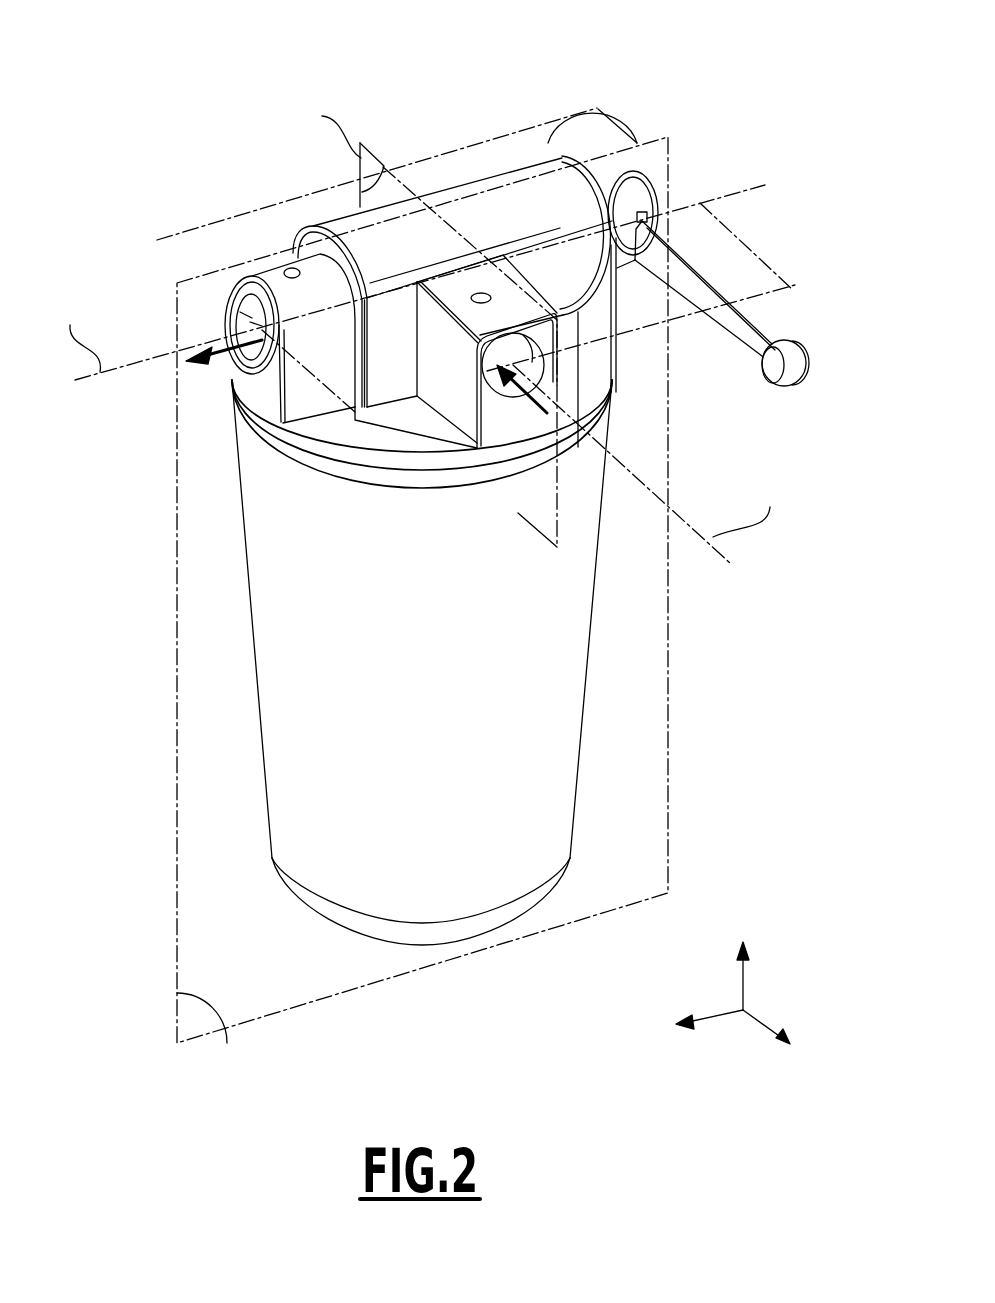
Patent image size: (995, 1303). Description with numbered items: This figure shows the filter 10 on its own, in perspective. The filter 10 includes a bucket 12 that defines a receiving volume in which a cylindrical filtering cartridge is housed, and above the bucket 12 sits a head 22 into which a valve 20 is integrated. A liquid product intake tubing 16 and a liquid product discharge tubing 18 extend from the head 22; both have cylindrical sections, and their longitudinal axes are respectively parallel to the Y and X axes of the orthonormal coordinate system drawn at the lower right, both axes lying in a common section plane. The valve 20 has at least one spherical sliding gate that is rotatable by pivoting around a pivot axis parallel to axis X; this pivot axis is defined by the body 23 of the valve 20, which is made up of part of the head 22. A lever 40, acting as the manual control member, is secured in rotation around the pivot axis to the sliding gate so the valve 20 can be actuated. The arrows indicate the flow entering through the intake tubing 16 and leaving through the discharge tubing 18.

The filter 10 is at (357, 82).
The bucket 12 is at (533, 742).
The liquid product intake tubing 16 is at (540, 380).
The liquid product discharge tubing 18 is at (230, 322).
The valve 20 is at (648, 181).
The head 22 is at (238, 195).
The body 23 is at (515, 170).
The lever 40 is at (760, 322).